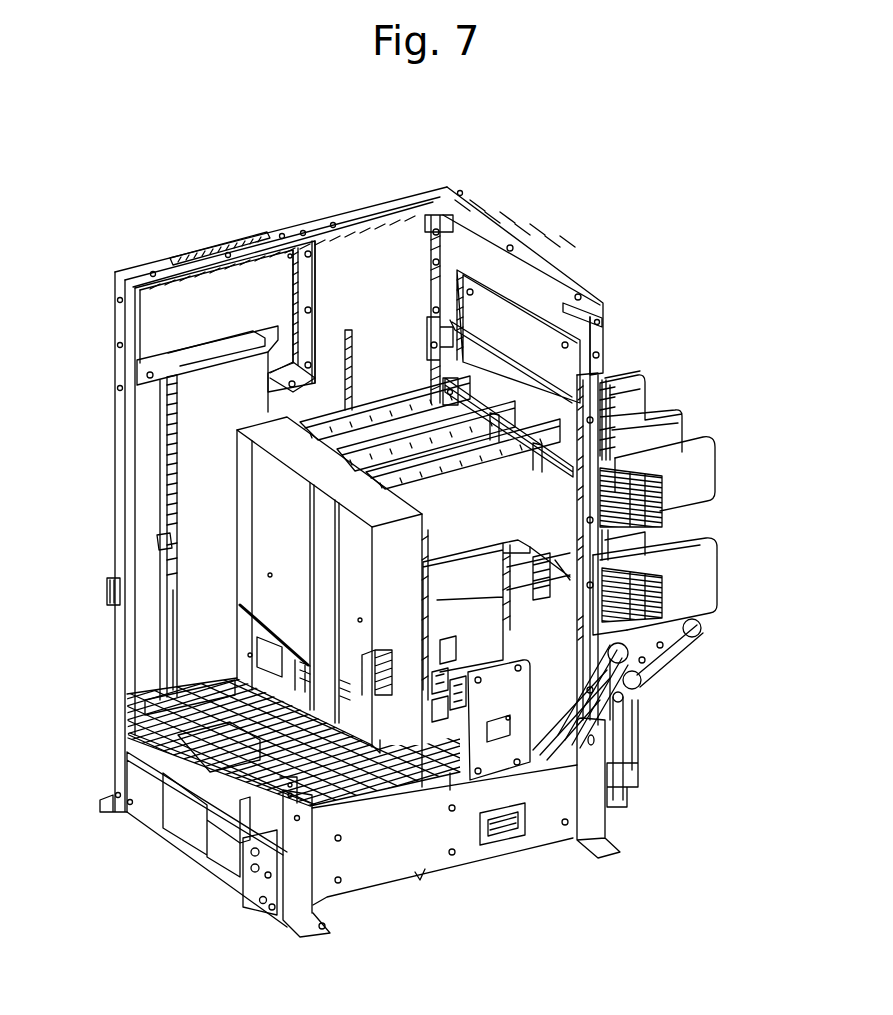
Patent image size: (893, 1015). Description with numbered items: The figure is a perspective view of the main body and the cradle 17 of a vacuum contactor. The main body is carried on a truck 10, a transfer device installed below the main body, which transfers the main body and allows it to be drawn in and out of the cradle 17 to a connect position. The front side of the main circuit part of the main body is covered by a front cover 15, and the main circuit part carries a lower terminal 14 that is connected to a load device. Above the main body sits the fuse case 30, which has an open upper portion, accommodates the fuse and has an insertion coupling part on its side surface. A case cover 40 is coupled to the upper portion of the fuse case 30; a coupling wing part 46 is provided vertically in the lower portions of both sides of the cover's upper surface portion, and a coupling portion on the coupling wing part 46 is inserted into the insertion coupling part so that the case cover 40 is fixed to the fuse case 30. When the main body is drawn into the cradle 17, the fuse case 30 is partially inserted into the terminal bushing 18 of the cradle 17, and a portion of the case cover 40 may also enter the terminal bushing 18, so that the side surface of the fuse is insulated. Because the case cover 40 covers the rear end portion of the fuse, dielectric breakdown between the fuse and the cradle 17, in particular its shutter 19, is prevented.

The truck 10 is at (127, 748).
The lower terminal 14 is at (545, 600).
The front cover 15 is at (257, 592).
The cradle 17 is at (135, 481).
The terminal bushing 18 is at (708, 466).
The shutter 19 is at (482, 345).
The fuse case 30 is at (490, 525).
The case cover 40 is at (490, 400).
The coupling wing part 46 is at (522, 497).